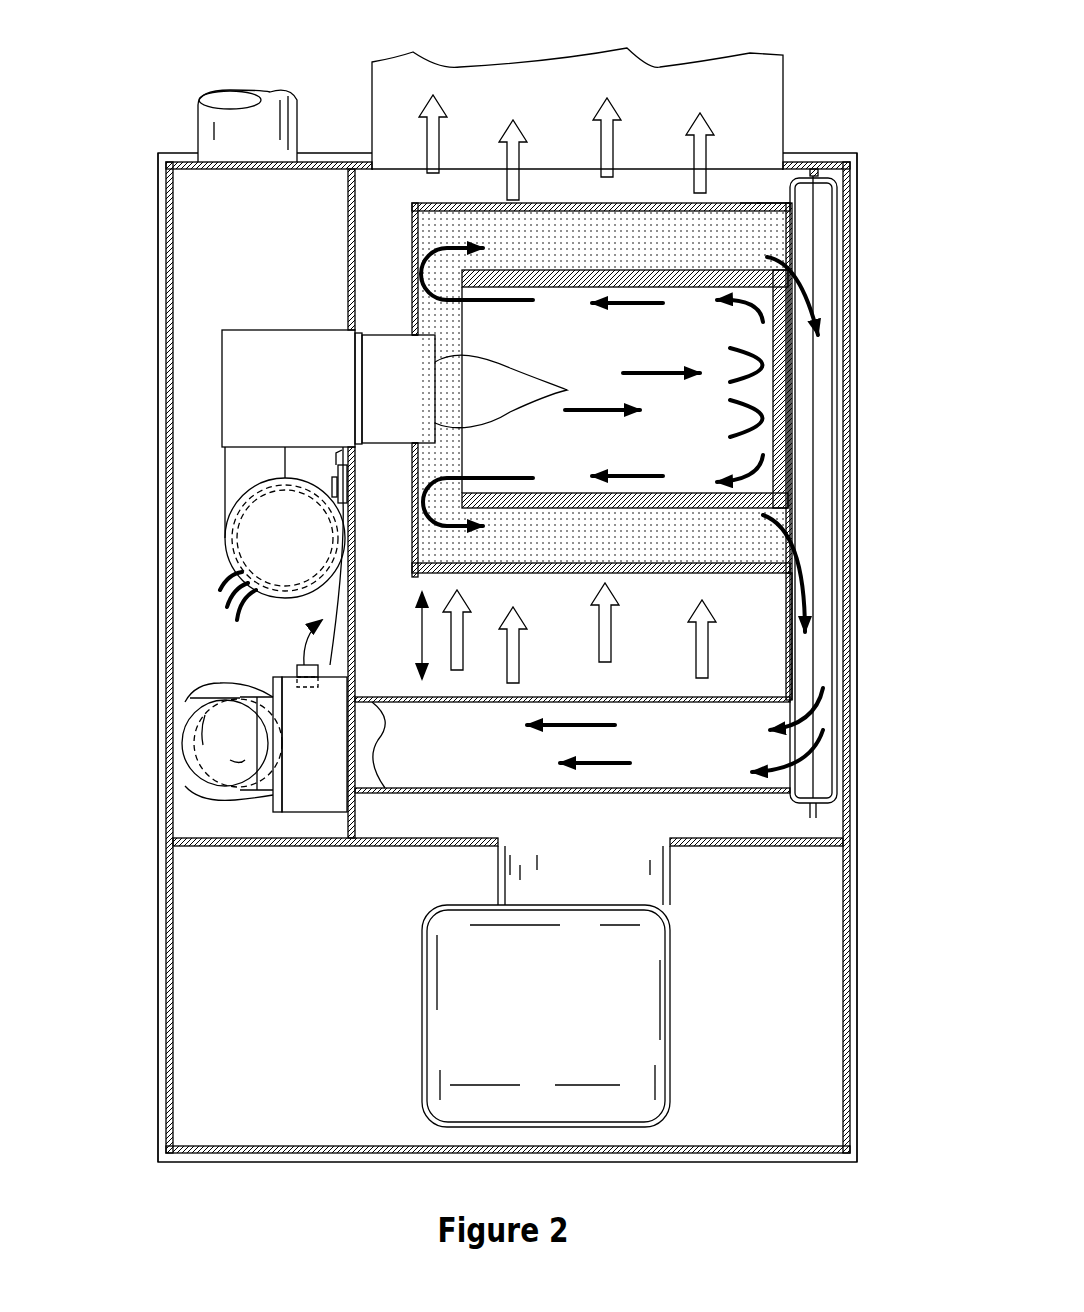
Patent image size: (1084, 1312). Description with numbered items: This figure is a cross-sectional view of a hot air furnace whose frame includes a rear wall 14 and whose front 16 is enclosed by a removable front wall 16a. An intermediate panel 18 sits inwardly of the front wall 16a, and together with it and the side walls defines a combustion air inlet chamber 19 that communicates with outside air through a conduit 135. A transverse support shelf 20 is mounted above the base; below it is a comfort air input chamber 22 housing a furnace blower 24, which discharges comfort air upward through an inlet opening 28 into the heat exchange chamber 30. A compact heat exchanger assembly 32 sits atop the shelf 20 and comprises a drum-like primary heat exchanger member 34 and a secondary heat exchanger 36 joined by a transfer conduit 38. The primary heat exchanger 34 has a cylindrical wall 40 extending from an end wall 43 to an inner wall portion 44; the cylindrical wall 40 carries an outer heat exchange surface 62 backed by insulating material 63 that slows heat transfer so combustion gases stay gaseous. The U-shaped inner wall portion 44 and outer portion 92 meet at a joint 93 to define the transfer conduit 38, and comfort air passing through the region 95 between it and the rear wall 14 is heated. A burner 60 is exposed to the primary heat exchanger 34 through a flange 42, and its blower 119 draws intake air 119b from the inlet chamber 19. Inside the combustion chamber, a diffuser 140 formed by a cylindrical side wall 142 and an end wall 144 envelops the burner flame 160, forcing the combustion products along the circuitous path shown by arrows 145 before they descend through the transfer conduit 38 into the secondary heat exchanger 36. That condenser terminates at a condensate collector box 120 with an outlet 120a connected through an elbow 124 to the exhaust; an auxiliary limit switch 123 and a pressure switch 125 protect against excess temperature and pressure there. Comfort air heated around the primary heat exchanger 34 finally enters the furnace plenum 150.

The rear wall 14 is at (859, 266).
The front of the furnace 16 is at (112, 540).
The front wall 16a is at (165, 288).
The intermediate panel 18 is at (346, 252).
The combustion air inlet chamber 19 is at (212, 233).
The support shelf 20 is at (267, 847).
The comfort air input chamber 22 is at (265, 1035).
The furnace blower 24 is at (518, 1026).
The inlet opening 28 is at (633, 838).
The heat exchange chamber 30 is at (633, 648).
The heat exchanger assembly 32 is at (420, 654).
The primary heat exchanger member 34 is at (410, 238).
The secondary heat exchanger 36 is at (717, 794).
The transfer conduit 38 is at (832, 806).
The cylindrical wall 40 is at (752, 578).
The flange 42 is at (383, 353).
The end wall 43 is at (411, 302).
The inner wall portion 44 is at (797, 236).
The burner 60 is at (270, 384).
The outer heat exchange surface 62 is at (755, 205).
The insulating material 63 is at (733, 208).
The outer portion 92 is at (834, 392).
The joint 93 is at (820, 172).
The region 95 is at (859, 322).
The blower 119 is at (262, 551).
The intake air 119b is at (202, 603).
The condensate collector box 120 is at (305, 797).
The outlet 120a is at (190, 698).
The auxiliary limit switch 123 is at (298, 668).
The elbow 124 is at (245, 796).
The pressure switch 125 is at (333, 479).
The conduit 135 is at (214, 126).
The diffuser 140 is at (530, 372).
The cylindrical side wall 142 is at (693, 287).
The end wall 144 is at (770, 432).
The arrows 145 is at (620, 305).
The furnace plenum 150 is at (388, 82).
The burner flame 160 is at (517, 415).